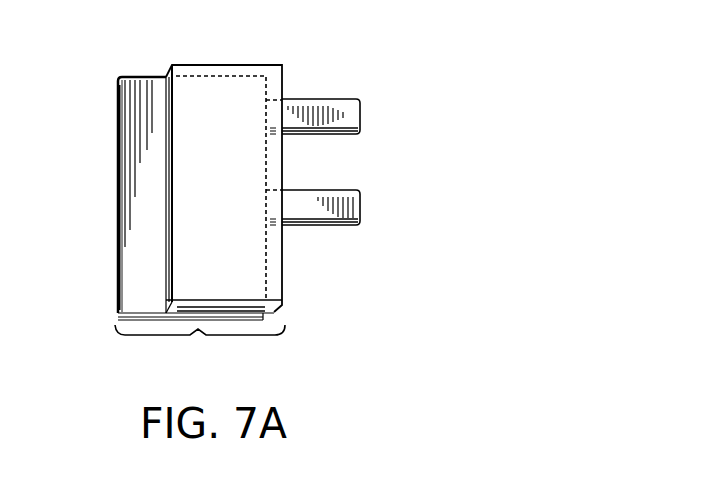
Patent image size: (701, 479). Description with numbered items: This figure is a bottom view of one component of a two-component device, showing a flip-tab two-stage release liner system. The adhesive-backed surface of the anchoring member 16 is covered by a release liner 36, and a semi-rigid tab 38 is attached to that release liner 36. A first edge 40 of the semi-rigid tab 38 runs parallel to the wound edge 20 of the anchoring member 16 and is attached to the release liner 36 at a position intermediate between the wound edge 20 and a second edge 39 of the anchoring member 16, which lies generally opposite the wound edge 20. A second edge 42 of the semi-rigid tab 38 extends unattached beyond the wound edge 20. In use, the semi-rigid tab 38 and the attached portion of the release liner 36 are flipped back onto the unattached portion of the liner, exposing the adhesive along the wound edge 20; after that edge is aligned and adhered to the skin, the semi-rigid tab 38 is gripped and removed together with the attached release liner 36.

The anchoring member 16 is at (200, 333).
The wound edge 20 is at (267, 278).
The release liner 36 is at (134, 77).
The semi-rigid tab 38 is at (214, 65).
The second edge of the anchoring member 39 is at (119, 143).
The first edge of the semi-rigid tab 40 is at (167, 280).
The second edge of the semi-rigid tab 42 is at (282, 177).